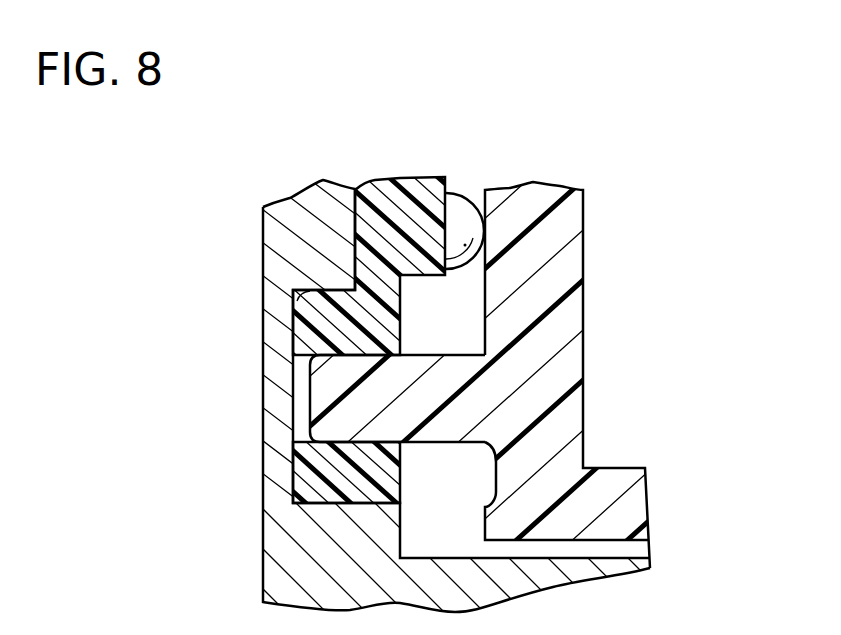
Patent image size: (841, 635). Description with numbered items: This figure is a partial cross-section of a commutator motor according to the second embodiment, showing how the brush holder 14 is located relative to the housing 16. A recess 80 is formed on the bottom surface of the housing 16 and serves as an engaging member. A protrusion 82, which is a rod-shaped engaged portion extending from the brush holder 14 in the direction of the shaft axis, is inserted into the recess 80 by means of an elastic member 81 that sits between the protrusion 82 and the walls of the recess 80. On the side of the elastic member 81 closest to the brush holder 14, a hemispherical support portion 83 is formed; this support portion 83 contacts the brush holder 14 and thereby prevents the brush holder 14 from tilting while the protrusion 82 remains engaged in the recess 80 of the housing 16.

The brush holder 14 is at (627, 505).
The housing 16 is at (287, 212).
The recess 80 is at (290, 309).
The elastic member 81 is at (305, 482).
The protrusion 82 is at (317, 397).
The hemispherical support portion 83 is at (465, 212).